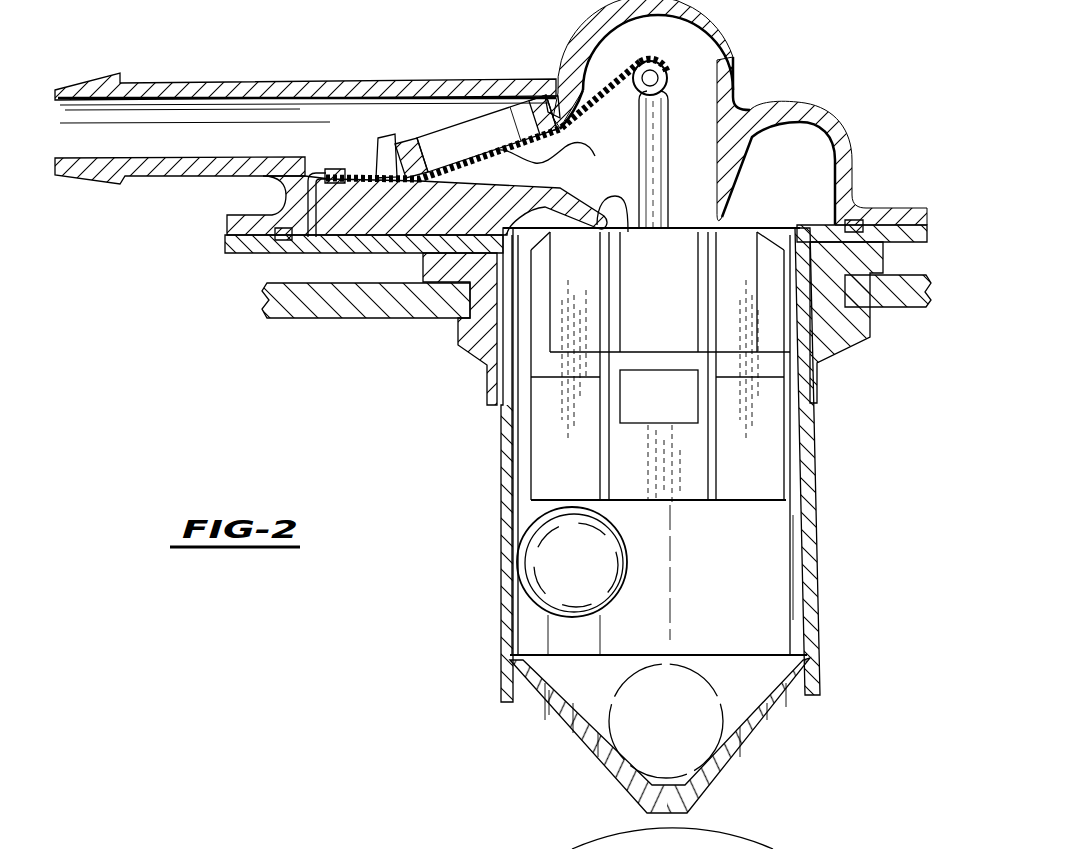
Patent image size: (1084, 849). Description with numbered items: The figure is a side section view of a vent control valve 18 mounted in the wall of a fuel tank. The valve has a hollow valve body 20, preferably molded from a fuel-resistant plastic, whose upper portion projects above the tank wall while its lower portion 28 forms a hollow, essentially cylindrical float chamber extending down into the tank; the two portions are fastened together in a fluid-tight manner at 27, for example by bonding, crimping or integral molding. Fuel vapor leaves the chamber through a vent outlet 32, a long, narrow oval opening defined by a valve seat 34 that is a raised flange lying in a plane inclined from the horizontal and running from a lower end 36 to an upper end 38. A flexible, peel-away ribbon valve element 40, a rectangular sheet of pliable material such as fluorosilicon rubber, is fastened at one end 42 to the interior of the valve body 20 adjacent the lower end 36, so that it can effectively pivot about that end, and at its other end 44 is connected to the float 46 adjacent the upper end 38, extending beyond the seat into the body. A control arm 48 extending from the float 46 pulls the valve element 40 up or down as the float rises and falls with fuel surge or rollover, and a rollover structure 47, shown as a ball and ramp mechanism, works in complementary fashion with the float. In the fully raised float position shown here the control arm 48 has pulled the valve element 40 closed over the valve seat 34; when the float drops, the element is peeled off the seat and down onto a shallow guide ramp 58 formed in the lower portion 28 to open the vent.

The valve 18 is at (442, 362).
The hollow valve body 20 is at (896, 210).
The fastening of upper portion to lower portion 27 is at (284, 243).
The lower portion 28 is at (820, 618).
The vent outlet 32 is at (462, 128).
The valve seat 34 is at (415, 177).
The lower end 36 is at (427, 175).
The upper end 38 is at (553, 103).
The ribbon valve element 40 is at (467, 190).
The end 42 is at (334, 170).
The other end 44 is at (667, 62).
The float 46 is at (543, 438).
The rollover structure 47 is at (553, 550).
The control arm 48 is at (662, 163).
The guide ramp 58 is at (625, 205).